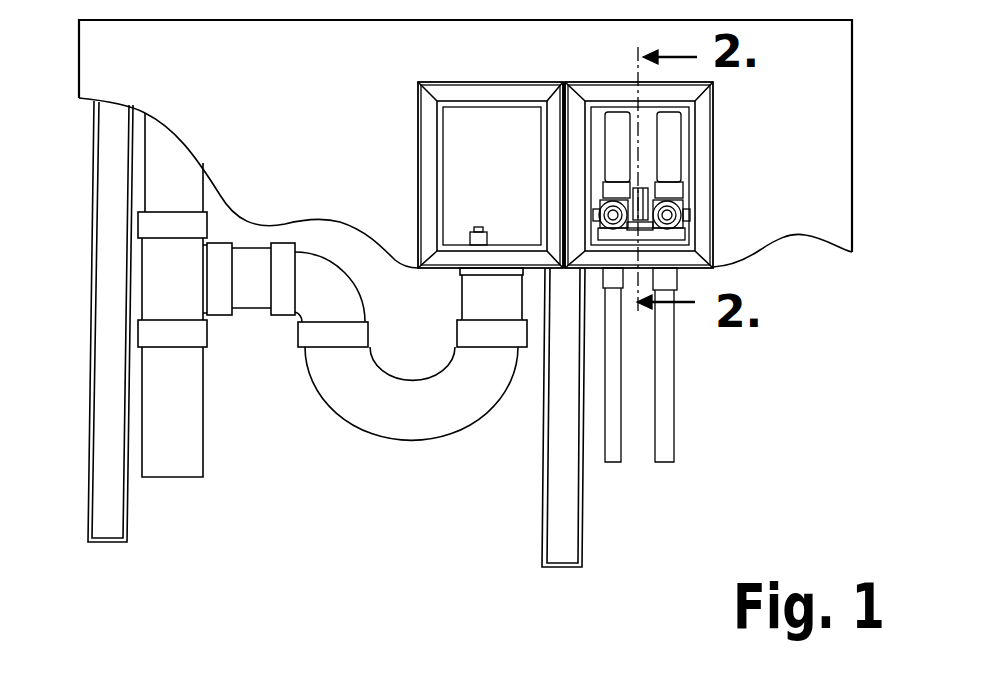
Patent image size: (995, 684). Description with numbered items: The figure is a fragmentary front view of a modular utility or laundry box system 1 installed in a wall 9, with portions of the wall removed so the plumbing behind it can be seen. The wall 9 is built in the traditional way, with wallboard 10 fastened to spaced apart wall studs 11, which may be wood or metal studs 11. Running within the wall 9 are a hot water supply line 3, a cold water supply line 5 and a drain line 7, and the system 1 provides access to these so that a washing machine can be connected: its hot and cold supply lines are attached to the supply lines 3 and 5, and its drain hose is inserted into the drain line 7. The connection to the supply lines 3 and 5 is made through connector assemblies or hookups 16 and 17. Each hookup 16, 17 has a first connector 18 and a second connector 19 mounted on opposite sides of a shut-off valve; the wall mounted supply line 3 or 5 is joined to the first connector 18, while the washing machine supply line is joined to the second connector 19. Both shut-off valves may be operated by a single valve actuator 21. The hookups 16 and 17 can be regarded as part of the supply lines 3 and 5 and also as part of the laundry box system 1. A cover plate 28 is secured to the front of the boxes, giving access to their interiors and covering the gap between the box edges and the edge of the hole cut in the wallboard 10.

The modular utility or laundry box system 1 is at (743, 110).
The hot water supply line 3 is at (662, 427).
The cold water supply line 5 is at (610, 435).
The drain line 7 is at (490, 302).
The wall 9 is at (78, 73).
The wallboard 10 is at (277, 88).
The wall studs 11 is at (107, 507).
The connector assembly or hookup 16 is at (683, 200).
The connector assembly or hookup 17 is at (600, 200).
The first connector 18 is at (665, 277).
The second connector 19 is at (681, 213).
The valve actuator 21 is at (653, 185).
The cover plate 28 is at (492, 90).